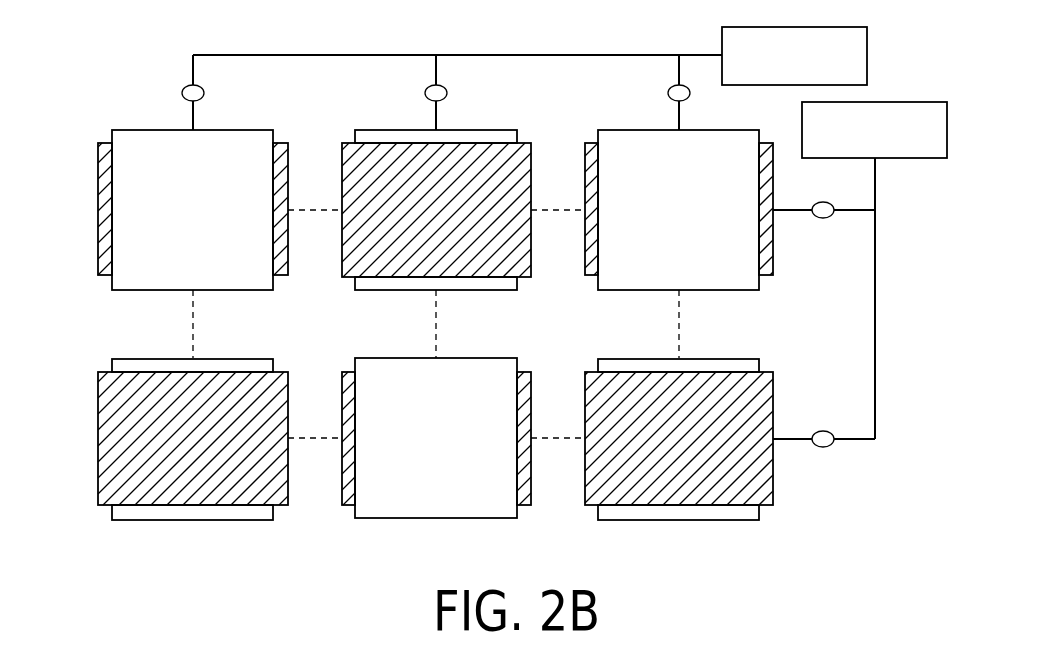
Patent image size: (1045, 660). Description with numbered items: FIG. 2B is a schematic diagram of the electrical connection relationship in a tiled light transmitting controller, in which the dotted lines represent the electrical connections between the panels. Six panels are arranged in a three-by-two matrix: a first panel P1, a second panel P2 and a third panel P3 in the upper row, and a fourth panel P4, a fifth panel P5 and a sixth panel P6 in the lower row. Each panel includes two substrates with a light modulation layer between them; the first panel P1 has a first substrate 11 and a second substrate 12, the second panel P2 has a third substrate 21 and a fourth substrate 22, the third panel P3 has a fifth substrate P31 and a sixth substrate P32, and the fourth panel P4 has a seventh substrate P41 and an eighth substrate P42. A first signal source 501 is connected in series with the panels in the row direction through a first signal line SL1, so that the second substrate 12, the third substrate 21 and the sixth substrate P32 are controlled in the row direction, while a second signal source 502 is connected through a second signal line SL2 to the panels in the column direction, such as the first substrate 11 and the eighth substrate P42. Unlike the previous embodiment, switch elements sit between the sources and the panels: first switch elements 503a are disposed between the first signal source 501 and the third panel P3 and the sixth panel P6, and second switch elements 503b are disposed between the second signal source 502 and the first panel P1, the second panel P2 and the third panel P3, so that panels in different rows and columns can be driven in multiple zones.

The first panel P1 is at (164, 206).
The second panel P2 is at (408, 210).
The third panel P3 is at (650, 210).
The fourth panel P4 is at (159, 443).
The fifth panel P5 is at (332, 358).
The sixth panel P6 is at (571, 360).
The first substrate 11 is at (233, 282).
The second substrate 12 is at (102, 276).
The third substrate 21 is at (348, 272).
The fourth substrate 22 is at (477, 283).
The fifth substrate P31 is at (722, 282).
The sixth substrate P32 is at (588, 276).
The seventh substrate P41 is at (105, 500).
The eighth substrate P42 is at (200, 513).
The first signal line SL1 is at (801, 210).
The second signal line SL2 is at (193, 75).
The first signal source 501 is at (874, 130).
The second signal source 502 is at (794, 56).
The first switch element 503a is at (823, 218).
The second switch element 503b is at (182, 95).